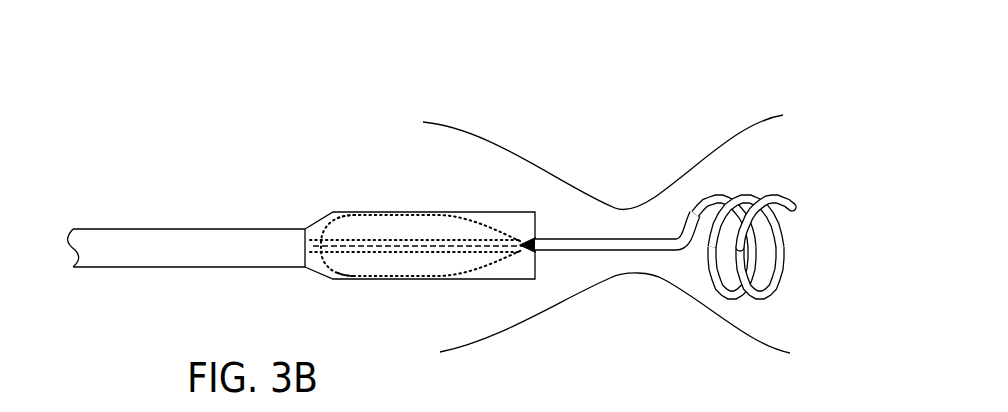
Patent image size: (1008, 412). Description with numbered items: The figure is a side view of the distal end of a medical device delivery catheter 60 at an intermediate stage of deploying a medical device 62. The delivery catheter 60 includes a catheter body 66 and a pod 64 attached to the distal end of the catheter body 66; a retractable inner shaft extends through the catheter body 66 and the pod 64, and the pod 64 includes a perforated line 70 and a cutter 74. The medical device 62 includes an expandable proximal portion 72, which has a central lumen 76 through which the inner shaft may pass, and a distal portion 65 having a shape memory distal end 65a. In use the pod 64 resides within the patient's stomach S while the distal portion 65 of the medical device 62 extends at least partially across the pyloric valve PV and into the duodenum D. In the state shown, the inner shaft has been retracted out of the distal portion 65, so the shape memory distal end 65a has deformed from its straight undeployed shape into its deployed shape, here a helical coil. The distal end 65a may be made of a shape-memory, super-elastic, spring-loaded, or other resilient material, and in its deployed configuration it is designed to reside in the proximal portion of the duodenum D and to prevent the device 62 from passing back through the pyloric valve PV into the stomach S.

The medical device delivery catheter 60 is at (330, 168).
The medical device 62 is at (578, 277).
The pod 64 is at (414, 208).
The distal portion 65 is at (657, 233).
The shape memory distal end 65a is at (758, 193).
The catheter body 66 is at (193, 226).
The perforated line 70 is at (405, 248).
The expandable proximal portion 72 is at (445, 272).
The cutter 74 is at (522, 238).
The central lumen 76 is at (340, 252).
The stomach S is at (487, 148).
The duodenum D is at (745, 158).
The pyloric valve PV is at (637, 184).